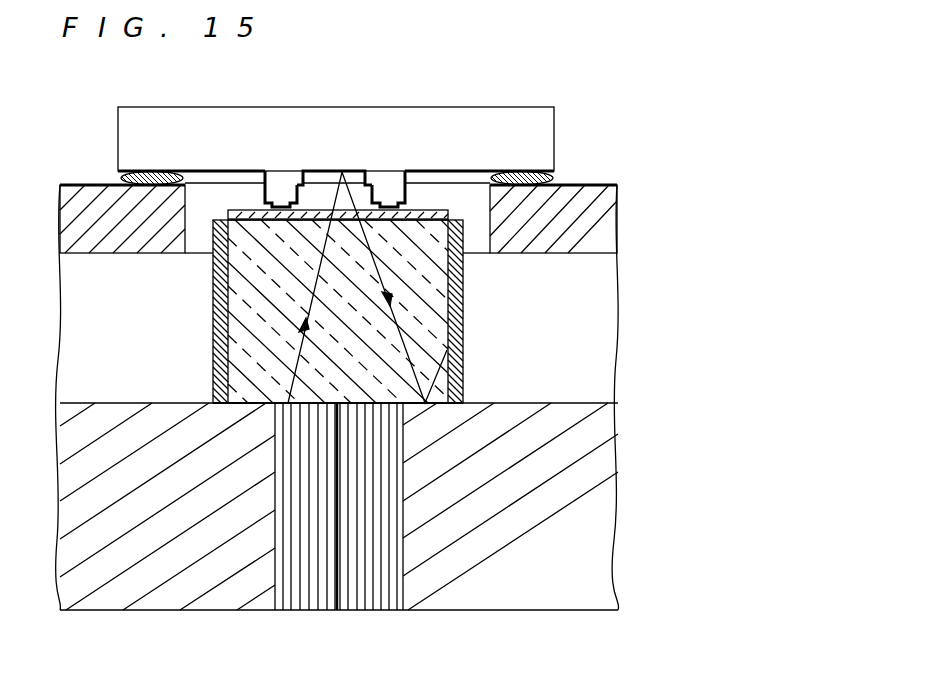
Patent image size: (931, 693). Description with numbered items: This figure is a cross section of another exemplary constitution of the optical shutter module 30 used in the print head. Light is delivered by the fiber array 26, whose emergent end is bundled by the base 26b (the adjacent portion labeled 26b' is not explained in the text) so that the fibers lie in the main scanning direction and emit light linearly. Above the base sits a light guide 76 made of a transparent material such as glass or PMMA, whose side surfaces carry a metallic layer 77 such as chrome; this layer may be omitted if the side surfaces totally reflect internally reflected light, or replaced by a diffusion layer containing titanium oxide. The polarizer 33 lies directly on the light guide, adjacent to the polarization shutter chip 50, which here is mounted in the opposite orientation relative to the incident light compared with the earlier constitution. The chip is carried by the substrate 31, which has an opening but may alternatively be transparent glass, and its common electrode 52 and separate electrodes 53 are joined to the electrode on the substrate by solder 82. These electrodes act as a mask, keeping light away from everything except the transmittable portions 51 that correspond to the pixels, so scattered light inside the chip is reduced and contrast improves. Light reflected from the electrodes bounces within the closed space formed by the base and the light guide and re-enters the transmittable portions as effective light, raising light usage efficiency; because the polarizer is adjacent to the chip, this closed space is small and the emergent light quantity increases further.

The optical shutter module 30 is at (598, 78).
The polarization shutter chip 50 is at (223, 108).
The transmittable portions 51 is at (285, 197).
The common electrode 52 is at (322, 168).
The separate electrodes 53 is at (200, 170).
The solder 82 is at (122, 178).
The substrate 31 is at (563, 255).
The polarizer 33 is at (246, 210).
The light guide 76 is at (437, 284).
The metallic layer 77 is at (463, 338).
The fiber array 26 is at (382, 598).
The base 26b is at (339, 534).
The base plate upper surface 26b' is at (300, 381).